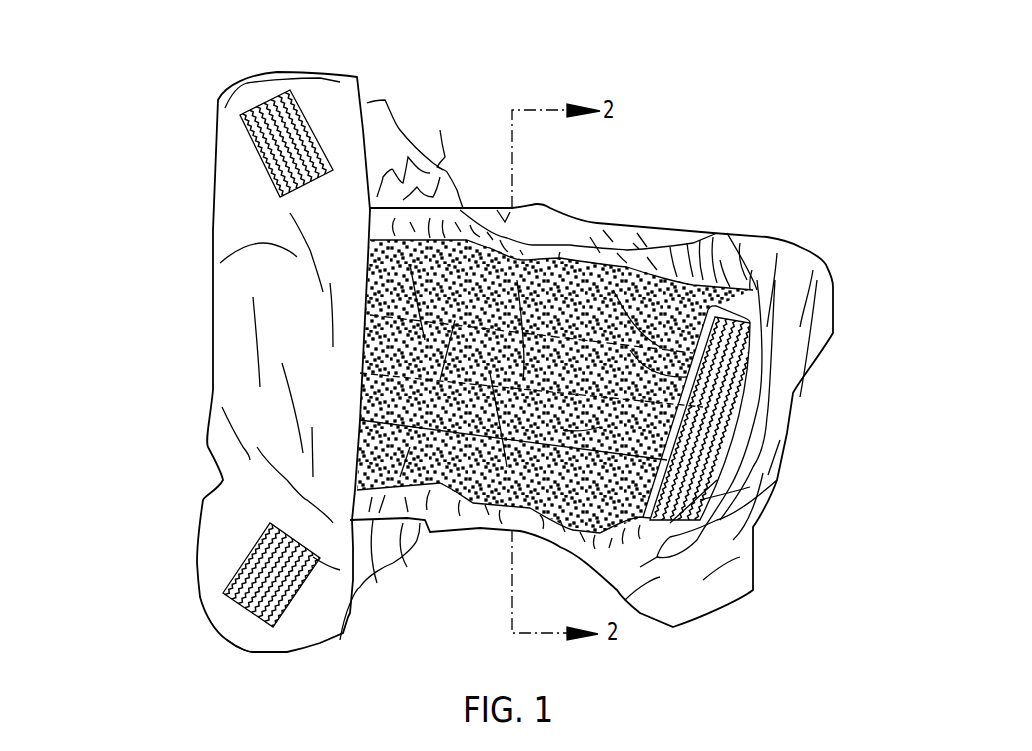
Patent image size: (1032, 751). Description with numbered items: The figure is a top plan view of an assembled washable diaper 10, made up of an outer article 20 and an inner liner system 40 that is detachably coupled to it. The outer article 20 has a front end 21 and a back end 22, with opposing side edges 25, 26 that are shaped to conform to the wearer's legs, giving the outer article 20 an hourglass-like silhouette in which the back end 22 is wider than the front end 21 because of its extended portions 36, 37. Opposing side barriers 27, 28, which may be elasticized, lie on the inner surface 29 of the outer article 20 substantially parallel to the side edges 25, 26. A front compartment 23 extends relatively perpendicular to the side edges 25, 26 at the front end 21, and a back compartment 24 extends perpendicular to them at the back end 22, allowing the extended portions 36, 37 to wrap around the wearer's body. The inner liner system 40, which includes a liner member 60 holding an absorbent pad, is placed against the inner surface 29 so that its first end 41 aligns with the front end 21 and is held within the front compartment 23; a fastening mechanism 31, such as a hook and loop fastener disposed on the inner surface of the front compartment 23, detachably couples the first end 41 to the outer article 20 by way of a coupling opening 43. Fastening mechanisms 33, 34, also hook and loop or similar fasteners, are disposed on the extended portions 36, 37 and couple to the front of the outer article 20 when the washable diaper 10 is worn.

The washable diaper 10 is at (170, 108).
The outer article 20 is at (380, 118).
The front end 21 is at (793, 430).
The back end 22 is at (212, 263).
The front compartment 23 is at (720, 553).
The back compartment 24 is at (275, 400).
The side edge 25 is at (597, 223).
The side edge 26 is at (463, 523).
The side barrier 27 is at (687, 255).
The side barrier 28 is at (420, 510).
The inner surface 29 is at (430, 172).
The fastening mechanism 31 is at (733, 380).
The fastening mechanism 33 is at (291, 103).
The fastening mechanism 34 is at (243, 577).
The extended portion 36 is at (260, 90).
The extended portion 37 is at (238, 627).
The inner liner system 40 is at (633, 570).
The first end 41 is at (750, 462).
The coupling opening 43 is at (745, 337).
The liner member 60 is at (470, 425).